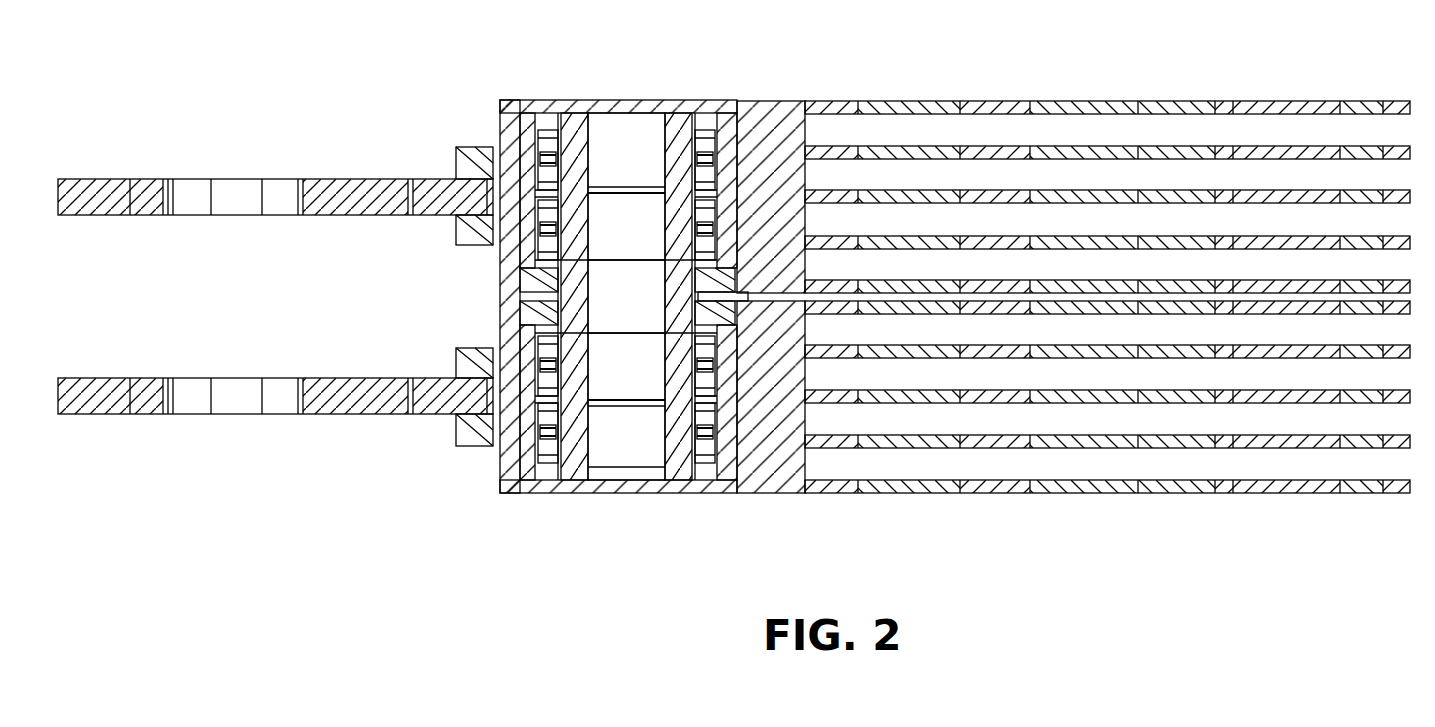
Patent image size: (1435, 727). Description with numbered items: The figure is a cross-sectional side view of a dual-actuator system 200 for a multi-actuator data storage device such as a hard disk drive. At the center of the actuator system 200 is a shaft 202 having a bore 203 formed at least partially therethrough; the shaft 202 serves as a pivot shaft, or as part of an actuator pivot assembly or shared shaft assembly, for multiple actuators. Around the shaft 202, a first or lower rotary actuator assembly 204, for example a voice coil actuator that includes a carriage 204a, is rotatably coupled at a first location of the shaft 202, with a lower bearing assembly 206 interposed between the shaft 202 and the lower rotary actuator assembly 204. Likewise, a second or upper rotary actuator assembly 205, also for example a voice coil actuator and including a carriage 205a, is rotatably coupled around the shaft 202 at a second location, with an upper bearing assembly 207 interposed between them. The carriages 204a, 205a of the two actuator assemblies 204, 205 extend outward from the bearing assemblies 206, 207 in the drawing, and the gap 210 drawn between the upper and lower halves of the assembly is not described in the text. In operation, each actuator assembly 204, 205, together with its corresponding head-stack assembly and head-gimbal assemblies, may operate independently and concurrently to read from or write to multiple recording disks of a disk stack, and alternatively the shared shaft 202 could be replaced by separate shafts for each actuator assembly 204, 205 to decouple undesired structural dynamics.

The actuator system 200 is at (978, 52).
The shaft 202 is at (612, 128).
The bore 203 is at (703, 143).
The lower rotary actuator assembly 204 is at (385, 415).
The carriage 204a is at (783, 485).
The upper rotary actuator assembly 205 is at (385, 178).
The carriage 205a is at (775, 137).
The lower bearing assembly 206 is at (703, 452).
The upper bearing assembly 207 is at (580, 138).
The gap 210 is at (560, 297).